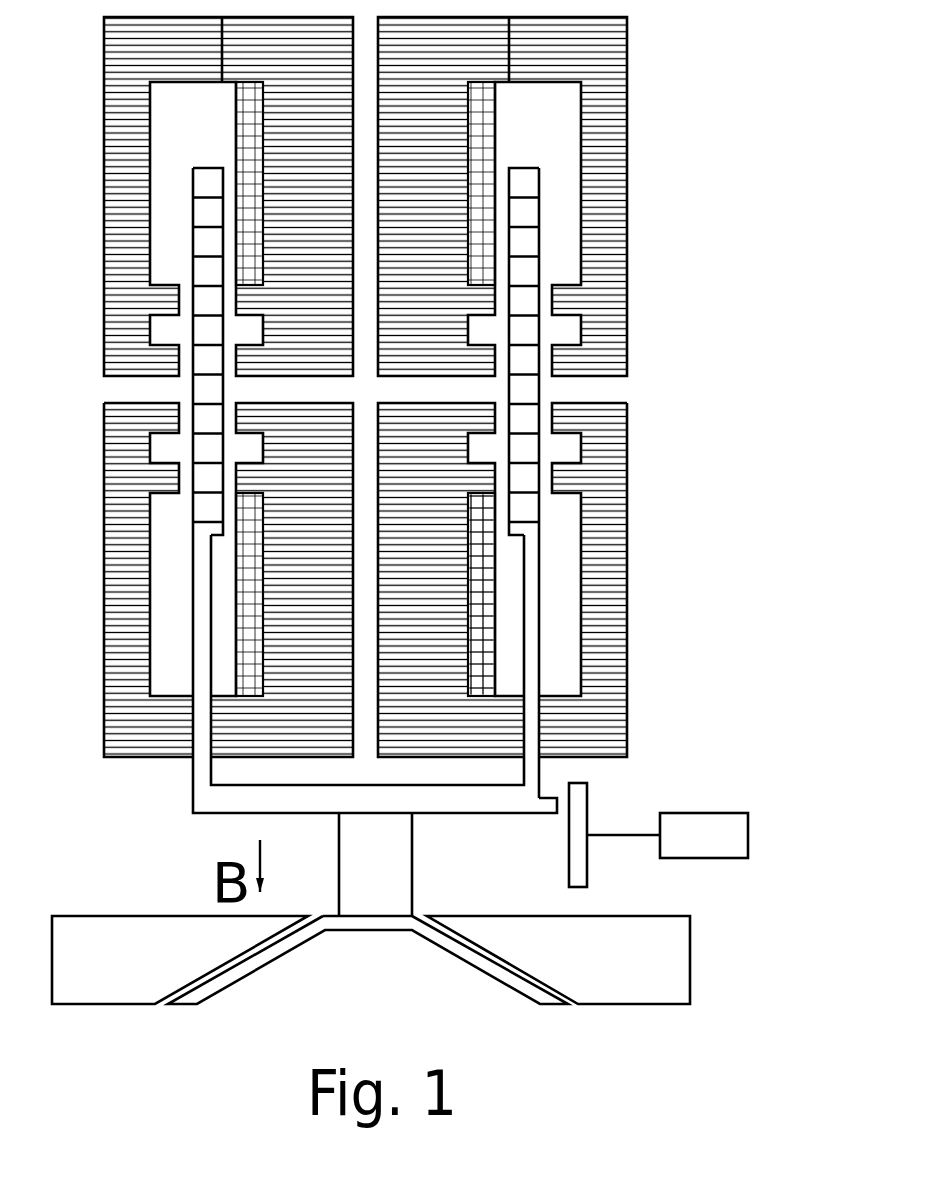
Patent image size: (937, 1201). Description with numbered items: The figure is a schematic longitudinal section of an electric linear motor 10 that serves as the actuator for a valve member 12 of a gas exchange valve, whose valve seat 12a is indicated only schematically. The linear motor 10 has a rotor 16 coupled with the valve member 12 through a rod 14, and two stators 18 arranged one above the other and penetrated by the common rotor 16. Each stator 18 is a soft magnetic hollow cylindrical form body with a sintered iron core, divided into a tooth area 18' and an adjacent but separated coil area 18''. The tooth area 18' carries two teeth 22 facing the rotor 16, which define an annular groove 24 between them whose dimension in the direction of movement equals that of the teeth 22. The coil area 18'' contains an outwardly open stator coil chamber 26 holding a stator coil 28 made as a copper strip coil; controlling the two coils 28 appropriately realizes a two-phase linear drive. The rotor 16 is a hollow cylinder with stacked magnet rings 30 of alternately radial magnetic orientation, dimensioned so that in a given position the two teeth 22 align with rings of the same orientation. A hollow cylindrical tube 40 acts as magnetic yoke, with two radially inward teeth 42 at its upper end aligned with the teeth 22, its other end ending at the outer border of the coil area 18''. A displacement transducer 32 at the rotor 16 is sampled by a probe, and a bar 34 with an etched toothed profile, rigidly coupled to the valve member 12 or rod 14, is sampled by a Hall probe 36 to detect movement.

The electric linear motor 10 is at (165, 777).
The valve member 12 is at (463, 965).
The valve seat 12a is at (497, 952).
The rod 14 is at (414, 864).
The rotor 16 is at (543, 766).
The stator 18 is at (542, 620).
The tooth area 18' is at (636, 403).
The coil area 18'' is at (597, 594).
The teeth 22 is at (497, 477).
The annular groove 24 is at (485, 447).
The stator coil chamber 26 is at (470, 593).
The stator coil 28 is at (497, 118).
The magnet rings 30 is at (542, 215).
The displacement transducer 32 is at (556, 808).
The bar 34 is at (622, 846).
The Hall probe 36 is at (703, 858).
The hollow cylindrical tube 40 is at (617, 570).
The teeth 42 is at (438, 434).